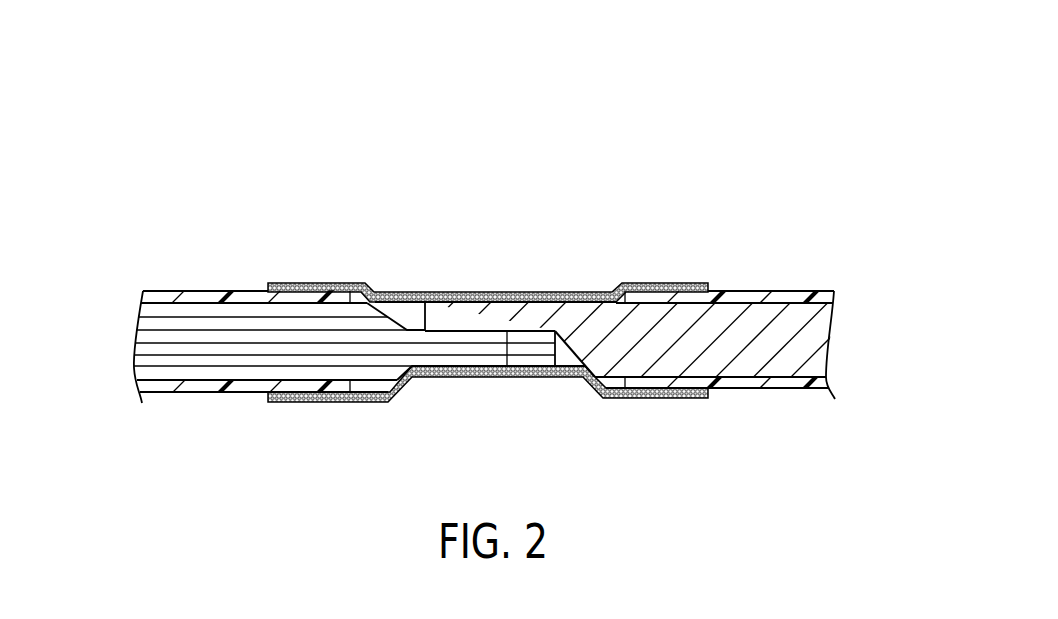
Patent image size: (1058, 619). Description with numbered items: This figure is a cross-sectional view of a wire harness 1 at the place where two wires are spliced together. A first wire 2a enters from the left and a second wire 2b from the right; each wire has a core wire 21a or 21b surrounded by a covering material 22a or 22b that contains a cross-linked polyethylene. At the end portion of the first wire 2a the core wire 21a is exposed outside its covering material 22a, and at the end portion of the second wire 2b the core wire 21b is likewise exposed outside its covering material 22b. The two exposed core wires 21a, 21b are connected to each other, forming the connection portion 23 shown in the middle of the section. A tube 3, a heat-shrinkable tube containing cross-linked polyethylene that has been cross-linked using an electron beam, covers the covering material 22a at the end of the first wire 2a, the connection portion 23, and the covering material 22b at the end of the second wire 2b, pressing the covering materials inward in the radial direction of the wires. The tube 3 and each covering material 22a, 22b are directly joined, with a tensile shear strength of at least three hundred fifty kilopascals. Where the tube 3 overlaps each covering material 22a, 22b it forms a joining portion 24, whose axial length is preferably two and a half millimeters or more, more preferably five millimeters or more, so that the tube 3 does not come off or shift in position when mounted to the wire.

The wire harness 1 is at (670, 108).
The first wire 2a is at (282, 186).
The second wire 2b is at (860, 186).
The core wire of the first wire 21a is at (231, 355).
The covering material of the first wire 22a is at (165, 293).
The core wire of the second wire 21b is at (808, 357).
The covering material of the second wire 22b is at (742, 300).
The tube 3 is at (515, 292).
The connection portion 23 is at (505, 345).
The joining portion 24 is at (318, 293).